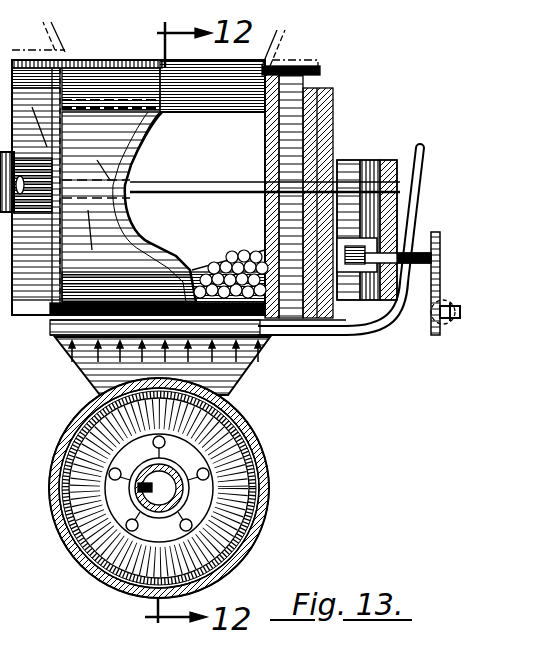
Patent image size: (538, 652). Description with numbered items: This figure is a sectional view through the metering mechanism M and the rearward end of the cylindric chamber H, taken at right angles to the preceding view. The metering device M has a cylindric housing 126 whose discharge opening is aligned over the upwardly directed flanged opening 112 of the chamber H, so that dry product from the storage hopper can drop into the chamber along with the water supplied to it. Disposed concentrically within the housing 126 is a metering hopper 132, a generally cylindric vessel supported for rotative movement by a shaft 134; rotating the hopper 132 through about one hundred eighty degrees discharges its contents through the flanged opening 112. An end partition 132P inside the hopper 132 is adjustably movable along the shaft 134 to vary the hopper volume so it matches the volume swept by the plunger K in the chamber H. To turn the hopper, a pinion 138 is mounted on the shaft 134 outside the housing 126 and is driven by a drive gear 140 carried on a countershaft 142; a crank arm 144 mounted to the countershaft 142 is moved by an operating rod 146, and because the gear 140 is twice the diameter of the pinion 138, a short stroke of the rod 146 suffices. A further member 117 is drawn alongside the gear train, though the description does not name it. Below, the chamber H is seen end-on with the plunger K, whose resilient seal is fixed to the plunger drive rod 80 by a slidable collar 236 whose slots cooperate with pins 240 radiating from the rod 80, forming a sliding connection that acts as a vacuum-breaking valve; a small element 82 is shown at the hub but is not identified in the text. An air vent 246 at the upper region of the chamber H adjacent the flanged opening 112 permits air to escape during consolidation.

The cylindric housing 126 is at (327, 64).
The end partition 132P is at (118, 126).
The metering hopper 132 is at (160, 135).
The shaft 134 is at (250, 190).
The pinion 138 is at (345, 172).
The lever 117 is at (428, 167).
The drive gear 140 is at (370, 317).
The countershaft 142 is at (431, 258).
The crank arm 144 is at (431, 237).
The operating rod 146 is at (438, 337).
The flanged opening 112 is at (247, 370).
The air vent 246 is at (159, 488).
The slidable collar 236 is at (159, 488).
The plunger drive rod 80 is at (167, 488).
The pins 240 is at (148, 466).
The key 82 is at (140, 495).
The cylindric chamber H is at (274, 498).
The metering mechanism M is at (355, 99).
The plunger K is at (136, 548).